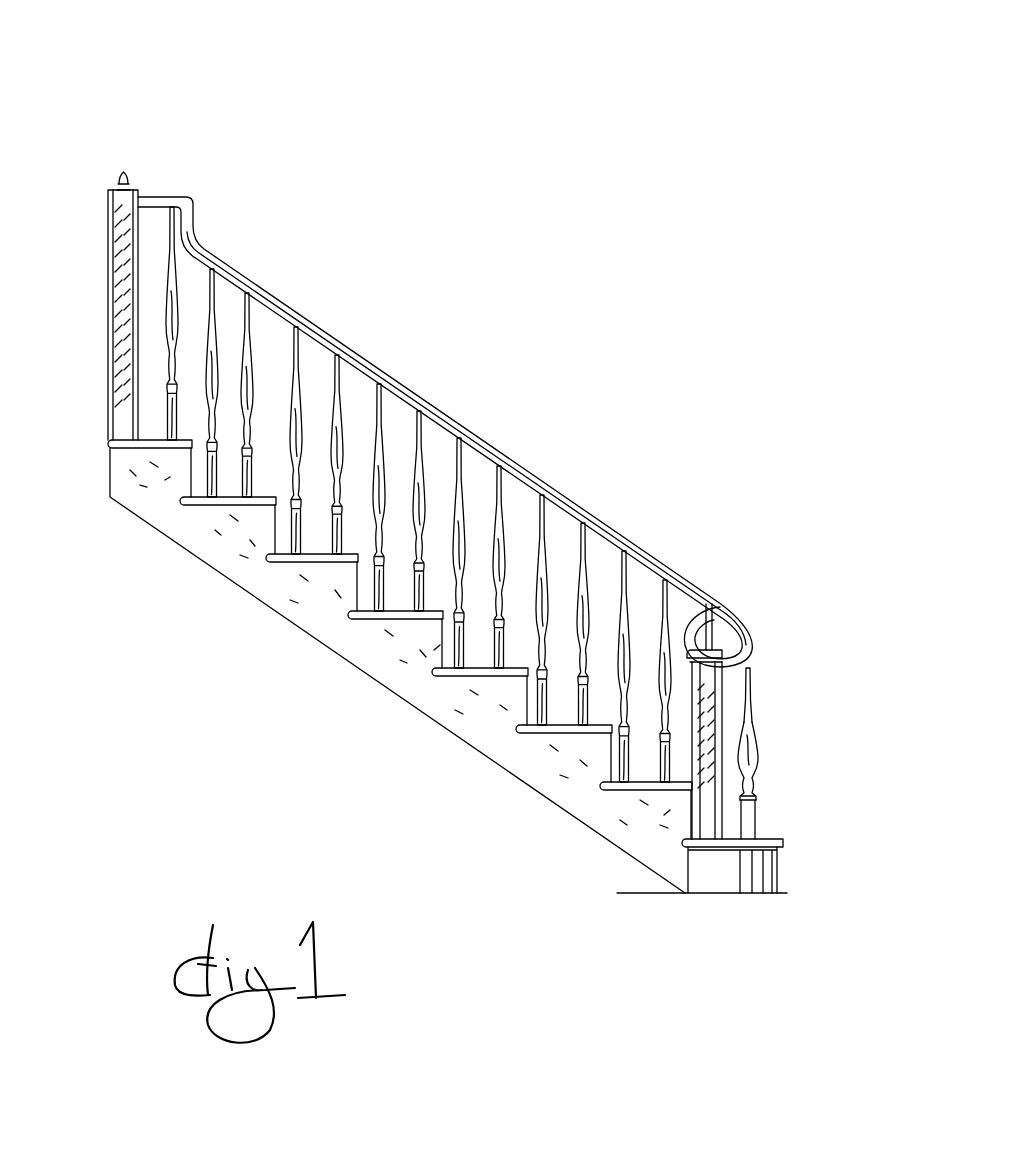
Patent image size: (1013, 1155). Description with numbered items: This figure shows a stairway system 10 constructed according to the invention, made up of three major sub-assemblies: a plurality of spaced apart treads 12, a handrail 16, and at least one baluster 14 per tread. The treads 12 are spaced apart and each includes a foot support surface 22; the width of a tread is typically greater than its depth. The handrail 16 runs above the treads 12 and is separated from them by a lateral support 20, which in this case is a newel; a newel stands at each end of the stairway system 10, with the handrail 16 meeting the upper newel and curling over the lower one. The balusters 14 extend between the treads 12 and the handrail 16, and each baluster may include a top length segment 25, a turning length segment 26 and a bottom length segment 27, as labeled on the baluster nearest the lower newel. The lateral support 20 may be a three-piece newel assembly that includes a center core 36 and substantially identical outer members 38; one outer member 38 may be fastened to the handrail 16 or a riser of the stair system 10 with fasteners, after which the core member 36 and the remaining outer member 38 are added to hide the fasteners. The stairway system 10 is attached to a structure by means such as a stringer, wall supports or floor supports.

The stairway system 10 is at (623, 168).
The treads 12 is at (482, 682).
The baluster 14 is at (404, 396).
The handrail 16 is at (353, 353).
The lateral support 20 is at (110, 197).
The foot support surface 22 is at (645, 782).
The top length segment 25 is at (755, 668).
The turning length segment 26 is at (765, 687).
The bottom length segment 27 is at (757, 817).
The center core 36 is at (122, 402).
The outer members 38 is at (127, 302).